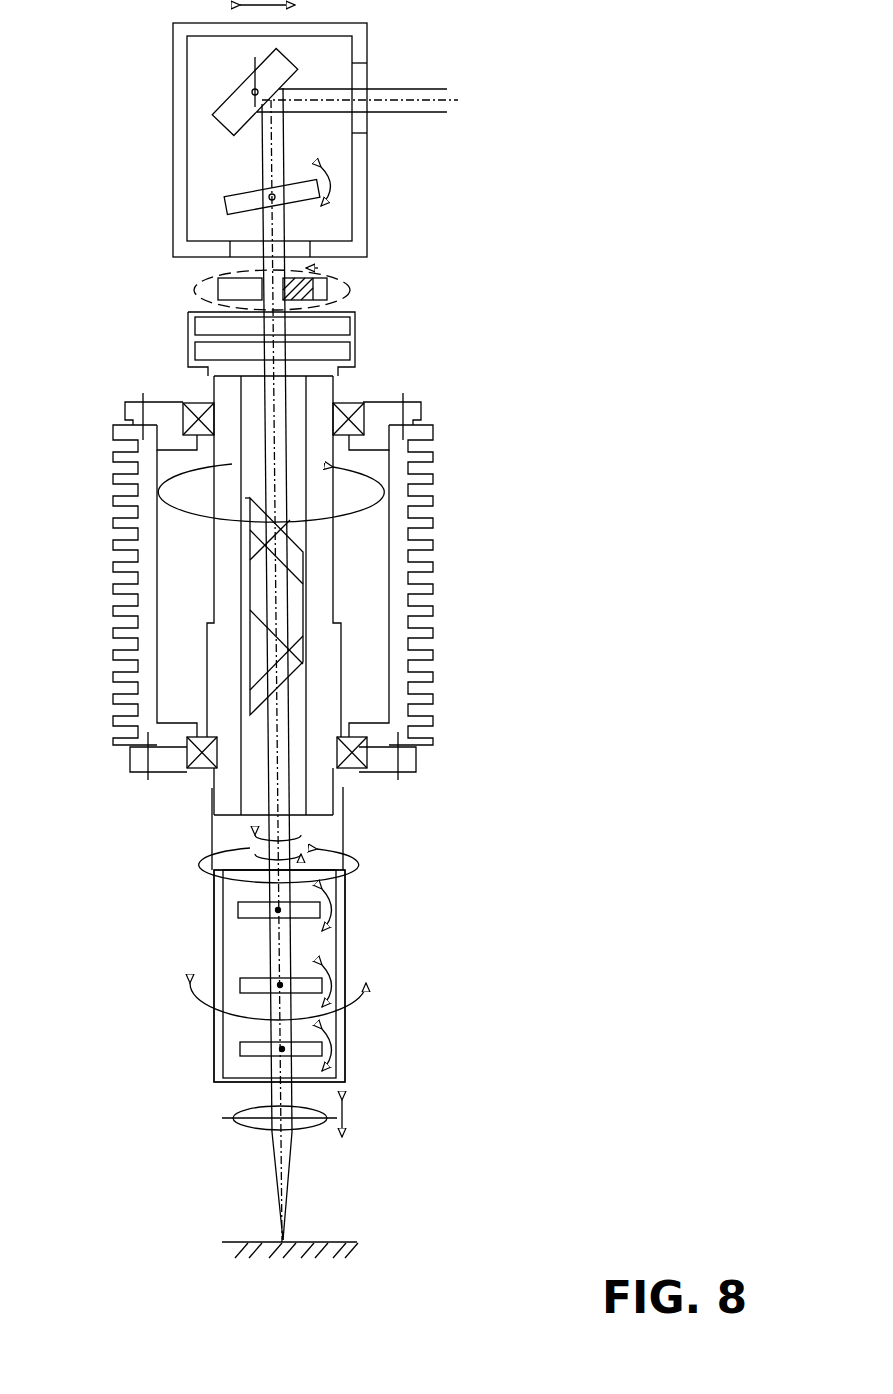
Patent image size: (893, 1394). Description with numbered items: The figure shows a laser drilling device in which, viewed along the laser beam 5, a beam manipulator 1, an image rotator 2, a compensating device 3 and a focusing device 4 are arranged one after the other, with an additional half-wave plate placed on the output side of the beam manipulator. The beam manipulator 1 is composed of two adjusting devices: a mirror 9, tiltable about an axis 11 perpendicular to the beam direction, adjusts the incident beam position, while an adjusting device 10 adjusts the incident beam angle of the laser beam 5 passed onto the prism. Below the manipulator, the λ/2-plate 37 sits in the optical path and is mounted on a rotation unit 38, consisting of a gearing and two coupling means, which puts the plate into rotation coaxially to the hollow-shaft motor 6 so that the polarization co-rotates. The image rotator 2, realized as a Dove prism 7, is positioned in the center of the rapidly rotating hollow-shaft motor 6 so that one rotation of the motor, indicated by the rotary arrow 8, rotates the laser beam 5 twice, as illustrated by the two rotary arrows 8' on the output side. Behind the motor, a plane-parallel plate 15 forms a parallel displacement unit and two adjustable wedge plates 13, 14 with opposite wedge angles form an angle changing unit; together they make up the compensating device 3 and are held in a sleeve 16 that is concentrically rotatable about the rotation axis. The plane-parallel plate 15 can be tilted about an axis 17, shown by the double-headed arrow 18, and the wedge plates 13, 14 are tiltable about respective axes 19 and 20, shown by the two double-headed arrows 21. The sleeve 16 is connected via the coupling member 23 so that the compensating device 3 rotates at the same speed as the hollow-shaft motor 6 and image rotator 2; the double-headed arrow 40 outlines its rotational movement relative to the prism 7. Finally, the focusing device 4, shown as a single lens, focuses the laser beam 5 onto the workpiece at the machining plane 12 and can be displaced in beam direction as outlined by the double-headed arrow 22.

The beam manipulator 1 is at (97, 116).
The image rotator 2 is at (90, 579).
The compensating device 3 is at (114, 940).
The focusing device 4 is at (250, 1112).
The laser beam 5 is at (400, 98).
The hollow-shaft motor 6 is at (423, 432).
The Dove prism 7 is at (290, 590).
The rotary arrow 8 is at (325, 673).
The rotary arrows 8' is at (229, 831).
The adjusting device (mirror) 9 is at (280, 62).
The adjusting device 10 is at (225, 202).
The axis 11 is at (252, 92).
The machining plane 12 is at (310, 1240).
The wedge plate 13 is at (246, 981).
The wedge plate 14 is at (243, 1050).
The plane-parallel plate 15 is at (240, 903).
The sleeve 16 is at (347, 925).
The axis 17 is at (276, 910).
The double-headed arrow 18 is at (340, 902).
The axis 19 is at (278, 984).
The axis 20 is at (280, 1048).
The double-headed arrows 21 is at (340, 970).
The double-headed arrow 22 is at (346, 1113).
The coupling member 23 is at (343, 800).
The λ/2-plate 37 is at (308, 287).
The rotation unit 38 is at (355, 330).
The double-headed arrow 40 is at (367, 998).